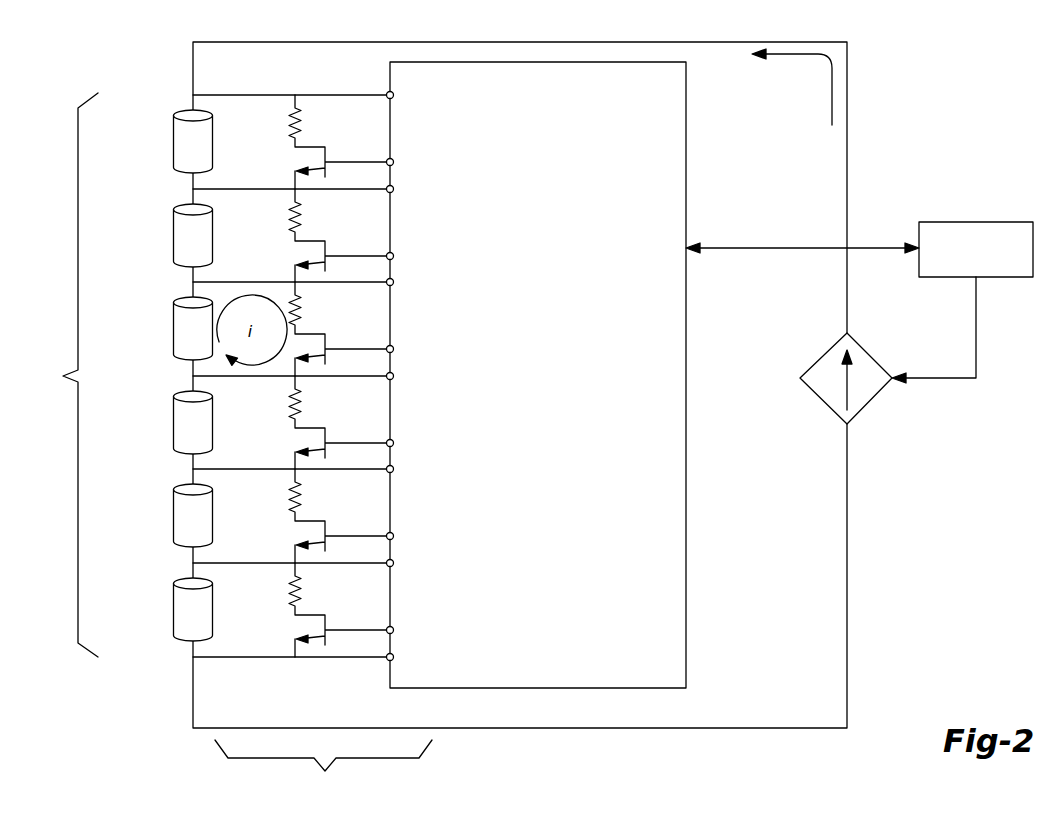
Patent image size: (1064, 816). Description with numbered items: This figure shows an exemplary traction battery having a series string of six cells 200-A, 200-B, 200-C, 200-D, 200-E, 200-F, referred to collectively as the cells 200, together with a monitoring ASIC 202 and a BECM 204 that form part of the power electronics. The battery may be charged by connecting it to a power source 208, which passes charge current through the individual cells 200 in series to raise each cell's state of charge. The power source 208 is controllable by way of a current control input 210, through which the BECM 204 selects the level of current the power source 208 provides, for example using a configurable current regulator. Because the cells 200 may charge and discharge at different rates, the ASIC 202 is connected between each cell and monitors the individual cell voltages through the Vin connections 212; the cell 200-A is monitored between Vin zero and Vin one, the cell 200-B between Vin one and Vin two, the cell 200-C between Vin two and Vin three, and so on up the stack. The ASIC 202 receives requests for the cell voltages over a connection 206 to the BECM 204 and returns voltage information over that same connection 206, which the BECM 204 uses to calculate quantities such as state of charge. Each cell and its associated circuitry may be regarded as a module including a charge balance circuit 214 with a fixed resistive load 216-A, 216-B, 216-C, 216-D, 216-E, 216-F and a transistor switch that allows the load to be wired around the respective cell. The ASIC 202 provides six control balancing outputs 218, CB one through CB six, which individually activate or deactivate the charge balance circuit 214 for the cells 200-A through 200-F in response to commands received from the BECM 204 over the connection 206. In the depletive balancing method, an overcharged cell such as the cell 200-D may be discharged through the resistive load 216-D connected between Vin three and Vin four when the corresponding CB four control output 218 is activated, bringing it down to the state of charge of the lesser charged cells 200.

The cells 200 is at (209, 375).
The cell 200-A is at (173, 610).
The cell 200-B is at (173, 516).
The cell 200-C is at (173, 422).
The cell 200-D is at (173, 328).
The cell 200-E is at (173, 236).
The cell 200-F is at (173, 142).
The monitoring ASIC 202 is at (541, 391).
The BECM 204 is at (976, 222).
The connection 206 is at (792, 245).
The power source 208 is at (915, 453).
The current control input 210 is at (976, 323).
The connections 212 is at (469, 80).
The charge balance circuit 214 is at (323, 769).
The resistive load 216-A is at (339, 610).
The resistive load 216-B is at (339, 516).
The resistive load 216-C is at (339, 422).
The resistive load 216-D is at (339, 329).
The resistive load 216-E is at (339, 235).
The resistive load 216-F is at (339, 142).
The control balancing outputs 218 is at (426, 150).